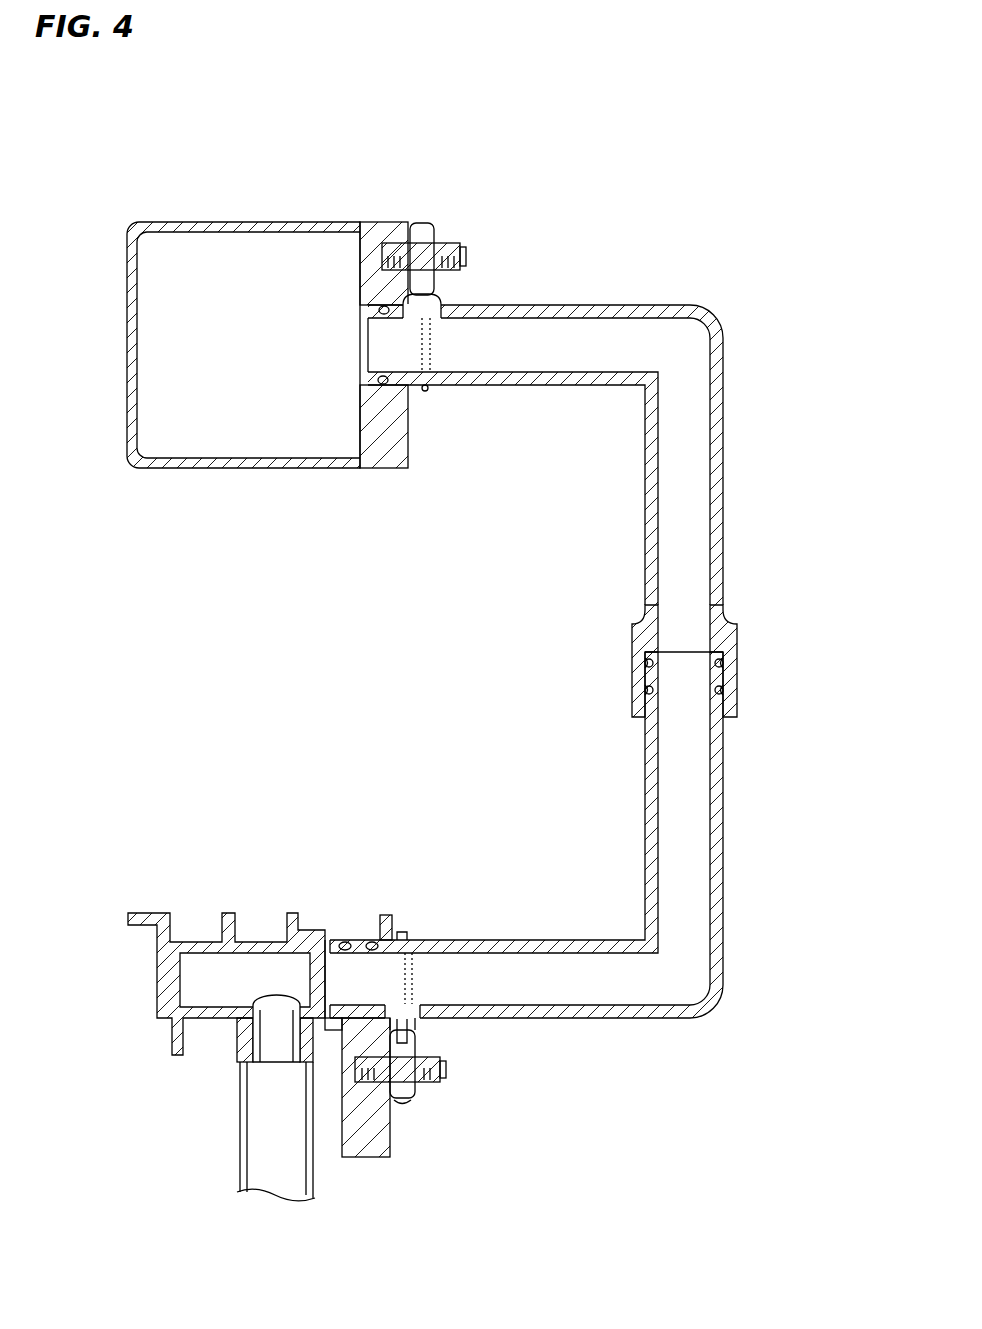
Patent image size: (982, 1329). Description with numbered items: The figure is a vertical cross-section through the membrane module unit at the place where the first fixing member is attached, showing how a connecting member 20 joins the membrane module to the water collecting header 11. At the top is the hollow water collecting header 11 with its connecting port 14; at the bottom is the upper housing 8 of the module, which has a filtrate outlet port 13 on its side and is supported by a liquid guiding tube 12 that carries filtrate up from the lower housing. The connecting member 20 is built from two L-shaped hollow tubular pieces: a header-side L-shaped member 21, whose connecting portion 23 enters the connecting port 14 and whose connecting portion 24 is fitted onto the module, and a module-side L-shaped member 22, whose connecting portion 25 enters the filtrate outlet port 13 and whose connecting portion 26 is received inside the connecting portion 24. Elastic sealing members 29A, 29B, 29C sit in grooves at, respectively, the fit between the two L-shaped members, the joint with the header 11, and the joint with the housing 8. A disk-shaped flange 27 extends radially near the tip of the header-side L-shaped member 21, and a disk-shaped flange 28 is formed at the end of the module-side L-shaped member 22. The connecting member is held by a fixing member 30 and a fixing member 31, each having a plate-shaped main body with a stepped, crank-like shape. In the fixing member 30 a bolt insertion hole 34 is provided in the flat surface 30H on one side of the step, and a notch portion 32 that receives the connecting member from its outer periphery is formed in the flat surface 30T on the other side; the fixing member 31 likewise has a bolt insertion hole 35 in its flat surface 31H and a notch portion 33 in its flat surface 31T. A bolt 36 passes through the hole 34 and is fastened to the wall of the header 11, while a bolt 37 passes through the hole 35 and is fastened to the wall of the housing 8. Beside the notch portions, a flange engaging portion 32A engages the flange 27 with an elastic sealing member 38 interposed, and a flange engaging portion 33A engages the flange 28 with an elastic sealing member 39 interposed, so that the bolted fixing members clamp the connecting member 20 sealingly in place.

The housing 8 is at (203, 942).
The water collecting header 11 is at (212, 222).
The liquid guiding tube 12 is at (240, 1160).
The filtrate outlet port 13 is at (323, 957).
The connecting port 14 is at (372, 303).
The connecting member 20 is at (740, 306).
The header-side L-shaped member 21 is at (581, 305).
The module-side L-shaped member 22 is at (726, 900).
The connecting portion 23 is at (381, 305).
The connecting portion 24 is at (738, 636).
The connecting portion 25 is at (378, 940).
The connecting portion 26 is at (645, 698).
The flange 27 is at (420, 392).
The flange 28 is at (396, 936).
The sealing member 29A is at (724, 663).
The sealing member 29B is at (382, 386).
The sealing member 29C is at (327, 1012).
The fixing member 30 is at (413, 213).
The flat surface 30H is at (408, 300).
The flat surface 30T is at (432, 347).
The fixing member 31 is at (398, 1102).
The flat surface 31H is at (418, 982).
The flat surface 31T is at (410, 1103).
The notch portion 32 is at (452, 316).
The flange engaging portion 32A is at (418, 300).
The notch portion 33 is at (418, 1014).
The flange engaging portion 33A is at (407, 1015).
The bolt insertion hole 34 is at (448, 243).
The bolt insertion hole 35 is at (412, 1075).
The bolt 36 is at (466, 262).
The bolt 37 is at (446, 1066).
The sealing member 38 is at (426, 390).
The sealing member 39 is at (408, 940).